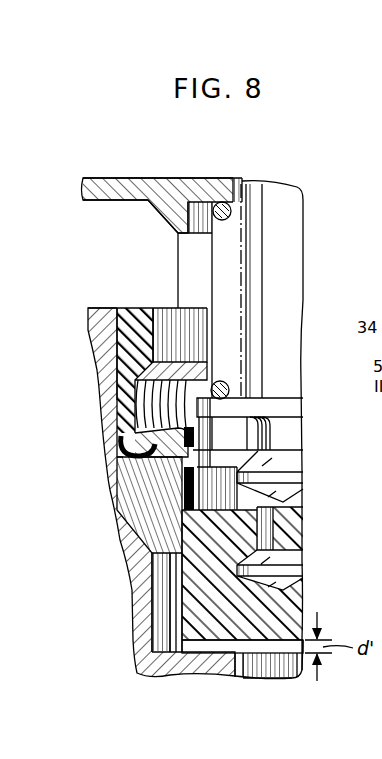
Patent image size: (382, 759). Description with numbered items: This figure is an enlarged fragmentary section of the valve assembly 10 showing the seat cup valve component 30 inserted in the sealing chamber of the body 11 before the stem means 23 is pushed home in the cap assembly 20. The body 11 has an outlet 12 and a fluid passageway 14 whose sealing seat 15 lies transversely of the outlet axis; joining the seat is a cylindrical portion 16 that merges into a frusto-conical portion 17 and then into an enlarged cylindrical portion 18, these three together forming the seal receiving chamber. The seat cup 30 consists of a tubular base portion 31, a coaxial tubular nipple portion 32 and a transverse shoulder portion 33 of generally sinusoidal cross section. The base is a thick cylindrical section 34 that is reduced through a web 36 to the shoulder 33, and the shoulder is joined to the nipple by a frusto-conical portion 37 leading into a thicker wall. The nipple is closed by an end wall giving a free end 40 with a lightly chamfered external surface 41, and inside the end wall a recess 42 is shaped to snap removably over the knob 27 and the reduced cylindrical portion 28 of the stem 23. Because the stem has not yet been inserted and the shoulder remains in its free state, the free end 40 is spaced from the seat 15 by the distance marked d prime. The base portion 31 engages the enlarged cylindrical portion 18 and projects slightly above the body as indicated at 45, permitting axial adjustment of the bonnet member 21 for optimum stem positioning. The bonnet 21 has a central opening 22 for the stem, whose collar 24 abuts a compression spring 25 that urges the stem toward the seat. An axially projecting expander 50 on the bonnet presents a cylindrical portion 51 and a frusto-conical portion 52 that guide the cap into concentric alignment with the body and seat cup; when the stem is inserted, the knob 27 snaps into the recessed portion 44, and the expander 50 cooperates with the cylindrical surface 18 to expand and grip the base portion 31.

The valve assembly 10 is at (107, 698).
The body 11 is at (121, 549).
The outlet 12 is at (282, 668).
The fluid passageway 14 is at (160, 587).
The sealing seat 15 is at (224, 648).
The cylindrical portion 16 is at (156, 621).
The frusto-conical portion 17 is at (138, 517).
The enlarged cylindrical portion 18 is at (118, 463).
The cap assembly 20 is at (192, 178).
The bonnet member 21 is at (115, 180).
The central opening 22 is at (237, 184).
The stem means 23 is at (282, 297).
The collar 24 is at (290, 410).
The compression spring 25 is at (205, 384).
The knob 27 is at (291, 479).
The reduced cylindrical portion 28 is at (290, 440).
The seat cup valve component 30 is at (163, 491).
The tubular base portion 31 is at (123, 351).
The tubular nipple portion 32 is at (288, 617).
The transverse shoulder portion 33 is at (146, 434).
The cylindrical section 34 is at (138, 317).
The web 36 is at (125, 392).
The frusto-conical portion 37 is at (202, 468).
The free end 40 is at (304, 668).
The chamfered external peripheral surface 41 is at (199, 643).
The recess 42 is at (288, 531).
The recessed portion 44 is at (288, 556).
The base portion extension 45 is at (118, 306).
The expander 50 is at (172, 237).
The cylindrical portion 51 is at (148, 203).
The frusto-conical portion 52 is at (161, 219).